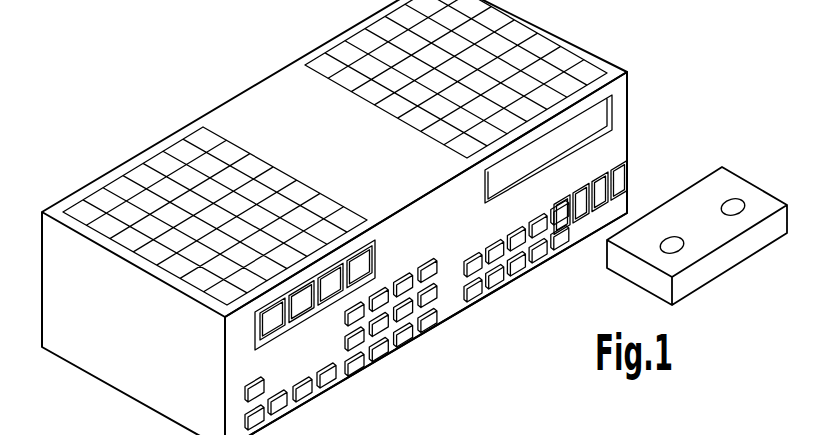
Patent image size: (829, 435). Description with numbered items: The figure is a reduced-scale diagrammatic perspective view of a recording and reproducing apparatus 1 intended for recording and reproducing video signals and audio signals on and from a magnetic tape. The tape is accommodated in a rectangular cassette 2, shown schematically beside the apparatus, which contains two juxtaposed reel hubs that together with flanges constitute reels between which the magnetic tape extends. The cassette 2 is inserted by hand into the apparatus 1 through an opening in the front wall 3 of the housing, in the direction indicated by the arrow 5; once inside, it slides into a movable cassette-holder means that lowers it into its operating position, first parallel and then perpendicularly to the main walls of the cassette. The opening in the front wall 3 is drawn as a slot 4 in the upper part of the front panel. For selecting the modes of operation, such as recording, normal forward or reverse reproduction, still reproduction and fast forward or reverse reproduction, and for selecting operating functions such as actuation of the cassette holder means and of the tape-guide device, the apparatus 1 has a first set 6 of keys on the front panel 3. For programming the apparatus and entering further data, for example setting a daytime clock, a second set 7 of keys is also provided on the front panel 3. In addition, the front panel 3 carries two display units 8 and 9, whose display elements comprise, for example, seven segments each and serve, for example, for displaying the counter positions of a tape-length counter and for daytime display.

The recording and reproducing apparatus 1 is at (273, 68).
The cassette 2 is at (746, 178).
The front wall 3 is at (450, 304).
The slot 4 is at (605, 118).
The arrow 5 is at (753, 272).
The first set of keys 6 is at (508, 288).
The second set of keys 7 is at (371, 364).
The display unit 8 is at (628, 166).
The display unit 9 is at (380, 249).